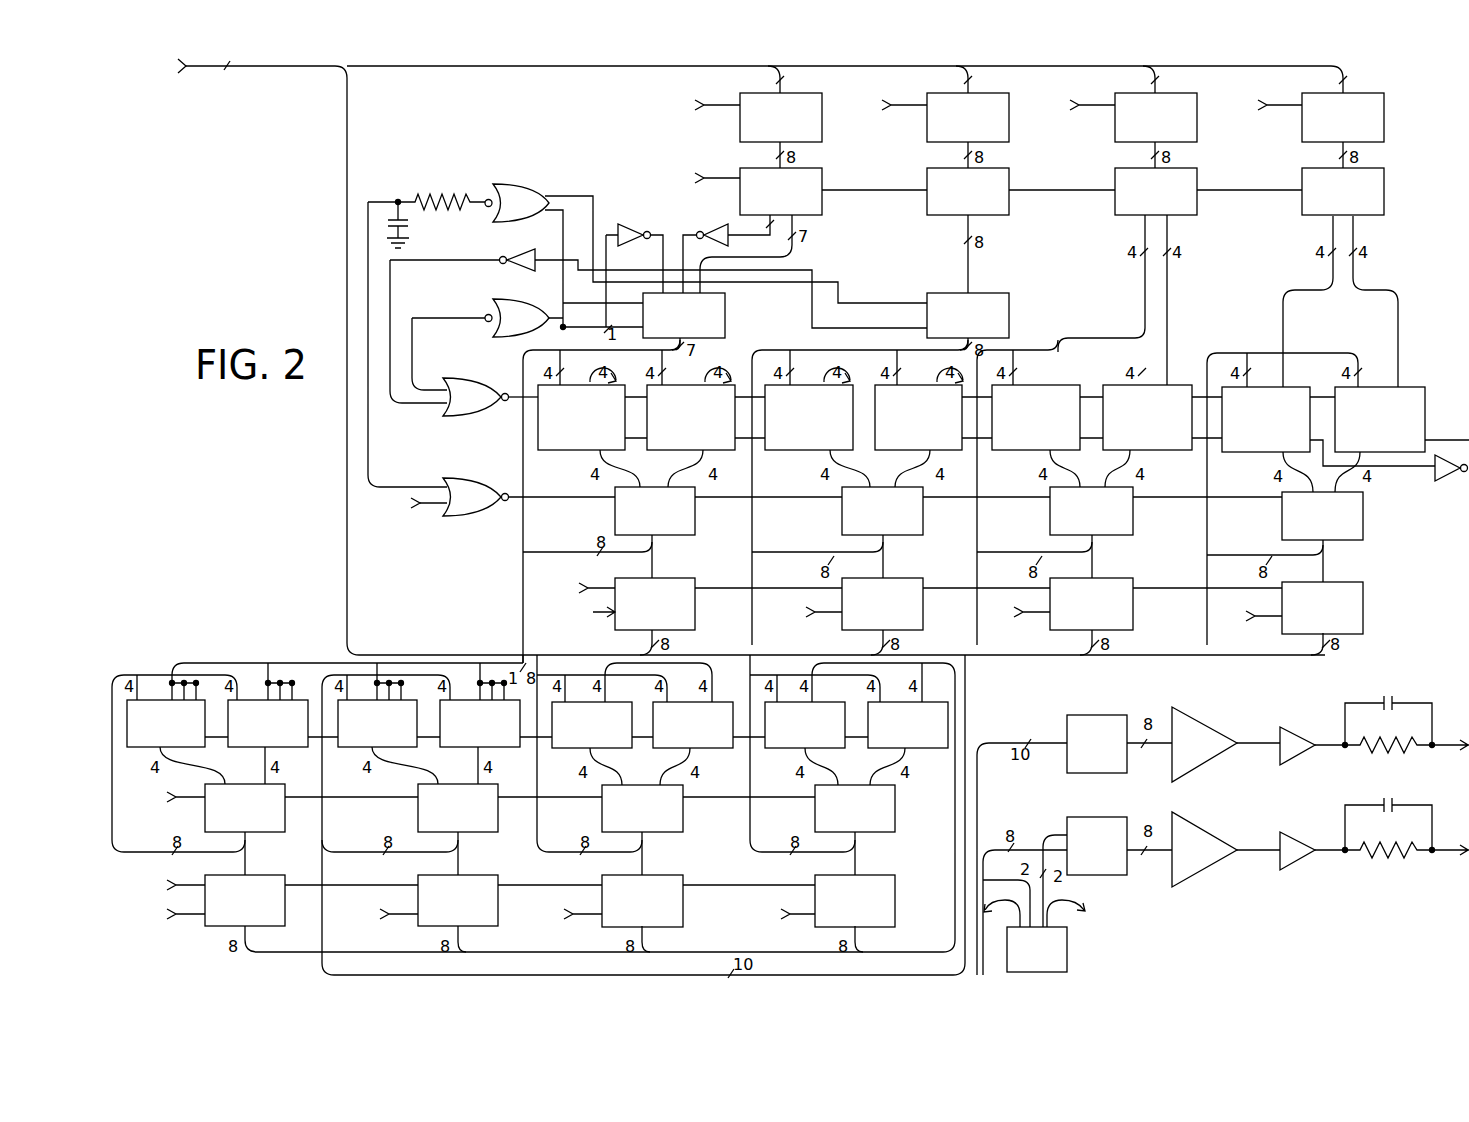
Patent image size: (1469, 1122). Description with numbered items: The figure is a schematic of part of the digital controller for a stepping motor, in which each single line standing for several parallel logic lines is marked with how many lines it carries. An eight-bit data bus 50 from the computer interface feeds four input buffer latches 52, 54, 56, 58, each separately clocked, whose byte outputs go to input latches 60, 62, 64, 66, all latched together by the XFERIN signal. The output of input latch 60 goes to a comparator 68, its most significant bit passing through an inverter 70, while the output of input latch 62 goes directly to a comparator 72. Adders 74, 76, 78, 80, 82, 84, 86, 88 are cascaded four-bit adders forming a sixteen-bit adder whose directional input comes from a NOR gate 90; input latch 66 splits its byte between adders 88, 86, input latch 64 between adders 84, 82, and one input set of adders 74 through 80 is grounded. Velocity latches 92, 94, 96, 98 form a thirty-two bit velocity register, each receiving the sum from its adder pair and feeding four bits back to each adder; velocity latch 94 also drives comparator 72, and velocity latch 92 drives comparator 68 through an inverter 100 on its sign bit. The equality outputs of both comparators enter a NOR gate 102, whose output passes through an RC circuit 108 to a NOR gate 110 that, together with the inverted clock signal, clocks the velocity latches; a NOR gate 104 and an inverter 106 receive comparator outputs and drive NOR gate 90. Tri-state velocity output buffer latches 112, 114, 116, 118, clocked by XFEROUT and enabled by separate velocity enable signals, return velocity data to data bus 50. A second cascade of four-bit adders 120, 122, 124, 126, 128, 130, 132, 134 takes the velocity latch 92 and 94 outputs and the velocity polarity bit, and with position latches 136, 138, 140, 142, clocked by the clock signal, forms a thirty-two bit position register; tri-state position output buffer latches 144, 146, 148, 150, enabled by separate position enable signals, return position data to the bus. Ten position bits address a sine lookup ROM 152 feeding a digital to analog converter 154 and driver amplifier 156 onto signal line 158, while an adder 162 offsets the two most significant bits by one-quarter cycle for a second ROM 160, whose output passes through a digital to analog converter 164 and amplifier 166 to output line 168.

The data bus 50 is at (296, 68).
The input buffer latch 52 is at (805, 136).
The input buffer latch 54 is at (992, 136).
The input buffer latch 56 is at (1180, 136).
The input buffer latch 58 is at (1367, 136).
The input latch 60 is at (805, 210).
The input latch 62 is at (992, 210).
The input latch 64 is at (1180, 210).
The input latch 66 is at (1367, 210).
The comparator 68 is at (702, 328).
The inverter 70 is at (720, 228).
The comparator 72 is at (985, 328).
The four bit adder 74 is at (595, 421).
The four bit adder 76 is at (707, 421).
The four bit adder 78 is at (825, 421).
The four bit adder 80 is at (935, 421).
The four bit adder 82 is at (1052, 421).
The four bit adder 84 is at (1164, 421).
The four bit adder 86 is at (1282, 423).
The four bit adder 88 is at (1402, 423).
The NOR gate 90 is at (482, 407).
The velocity latch 92 is at (682, 530).
The velocity latch 94 is at (909, 530).
The velocity latch 96 is at (1119, 530).
The velocity latch 98 is at (1349, 535).
The inverter 100 is at (632, 225).
The NOR gate 102 is at (545, 213).
The NOR gate 104 is at (545, 328).
The inverter 106 is at (525, 248).
The RC circuit 108 is at (402, 199).
The NOR gate 110 is at (491, 507).
The velocity output buffer latch 112 is at (691, 618).
The velocity output buffer latch 114 is at (919, 618).
The velocity output buffer latch 116 is at (1128, 618).
The velocity output buffer latch 118 is at (1359, 622).
The four-bit adder 120 is at (181, 725).
The four-bit adder 122 is at (286, 723).
The four-bit adder 124 is at (396, 723).
The four-bit adder 126 is at (498, 723).
The four-bit adder 128 is at (610, 724).
The four-bit adder 130 is at (711, 724).
The four-bit adder 132 is at (823, 724).
The four-bit adder 134 is at (941, 733).
The position latch 136 is at (203, 808).
The position latch 138 is at (459, 808).
The position latch 140 is at (643, 808).
The position latch 142 is at (856, 808).
The position output buffer latch 144 is at (282, 914).
The position output buffer latch 146 is at (496, 914).
The position output buffer latch 148 is at (680, 914).
The position output buffer latch 150 is at (893, 914).
The ROM 152 is at (1114, 755).
The digital to analog converter 154 is at (1216, 755).
The driver amplifier 156 is at (1300, 728).
The signal line 158 is at (1450, 748).
The ROM 160 is at (1114, 857).
The adder 162 is at (1054, 961).
The digital to analog converter 164 is at (1216, 862).
The amplifier 166 is at (1300, 833).
The output line 168 is at (1450, 853).